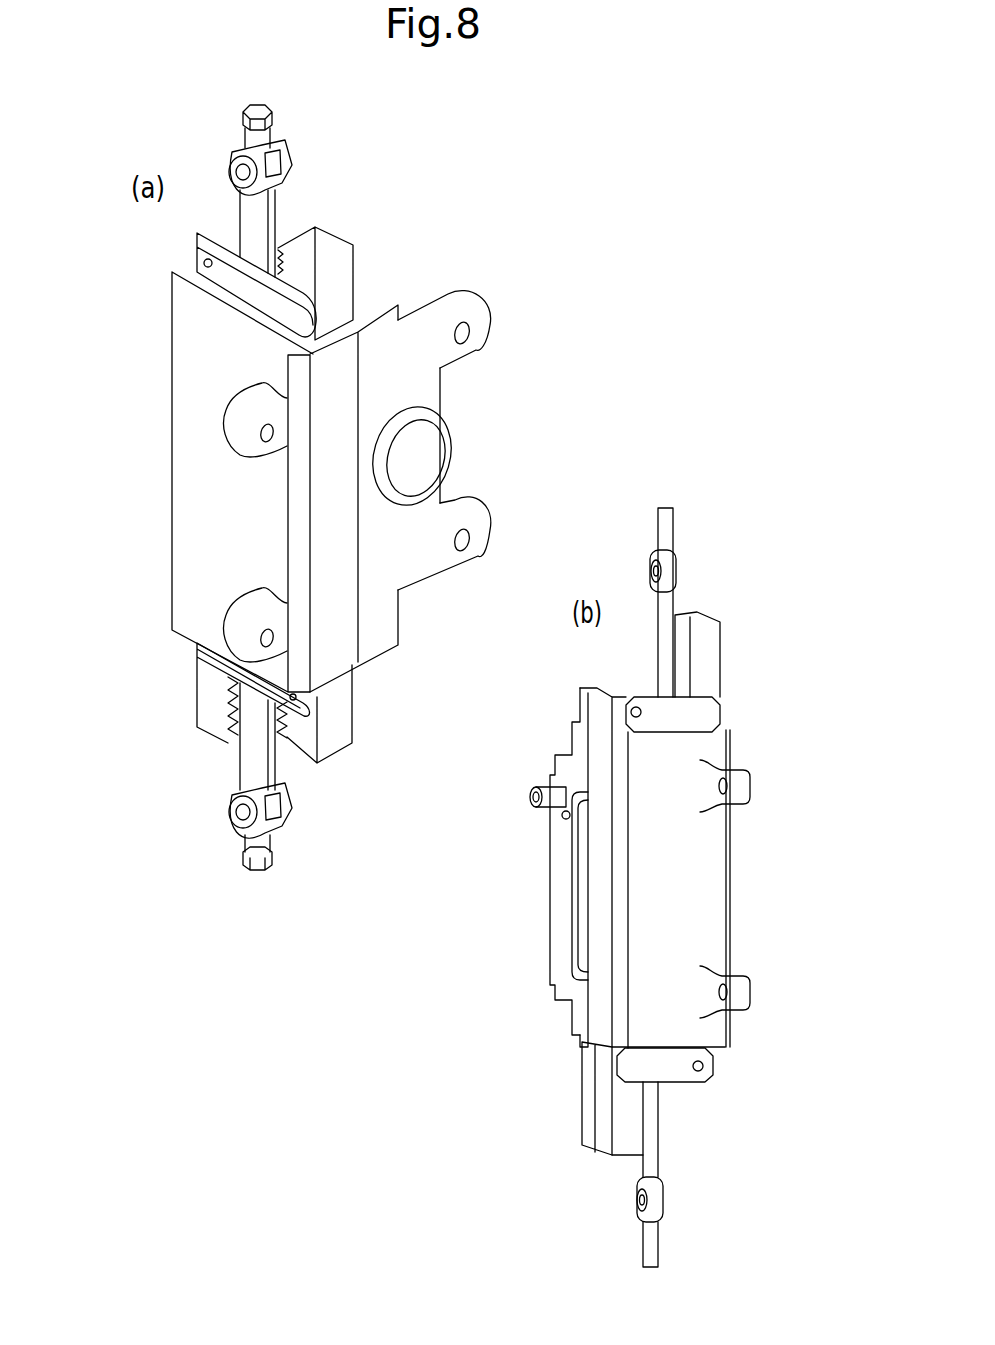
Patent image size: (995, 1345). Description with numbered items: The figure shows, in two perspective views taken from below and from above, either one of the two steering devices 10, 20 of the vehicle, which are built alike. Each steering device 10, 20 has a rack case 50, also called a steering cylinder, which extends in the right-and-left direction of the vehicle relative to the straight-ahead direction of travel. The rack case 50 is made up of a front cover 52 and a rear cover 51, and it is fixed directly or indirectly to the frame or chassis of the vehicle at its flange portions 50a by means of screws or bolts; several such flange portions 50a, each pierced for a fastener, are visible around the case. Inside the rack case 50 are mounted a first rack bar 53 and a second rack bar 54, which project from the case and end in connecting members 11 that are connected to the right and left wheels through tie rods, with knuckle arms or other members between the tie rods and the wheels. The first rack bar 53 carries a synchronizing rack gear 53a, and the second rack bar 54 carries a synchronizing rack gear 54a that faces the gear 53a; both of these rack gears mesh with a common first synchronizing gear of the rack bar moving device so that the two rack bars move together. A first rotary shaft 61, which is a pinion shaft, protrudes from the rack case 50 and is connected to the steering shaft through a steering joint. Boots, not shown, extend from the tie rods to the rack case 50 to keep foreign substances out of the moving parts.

The steering device 10 is at (456, 644).
The steering device 20 is at (456, 644).
The connecting member 11 is at (262, 217).
The rack case 50 is at (465, 712).
The flange portion 50a is at (477, 323).
The rear cover 51 is at (217, 575).
The front cover 52 is at (370, 570).
The first rack bar 53 is at (404, 899).
The synchronizing rack gear 53a is at (248, 727).
The second rack bar 54 is at (483, 433).
The synchronizing rack gear 54a is at (238, 247).
The first rotary shaft 61 is at (533, 795).